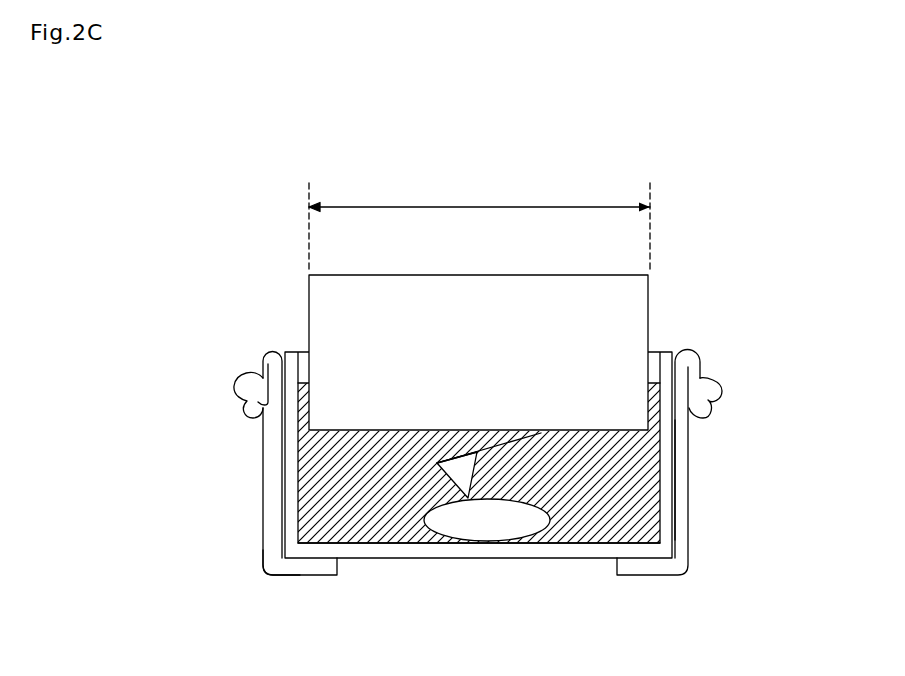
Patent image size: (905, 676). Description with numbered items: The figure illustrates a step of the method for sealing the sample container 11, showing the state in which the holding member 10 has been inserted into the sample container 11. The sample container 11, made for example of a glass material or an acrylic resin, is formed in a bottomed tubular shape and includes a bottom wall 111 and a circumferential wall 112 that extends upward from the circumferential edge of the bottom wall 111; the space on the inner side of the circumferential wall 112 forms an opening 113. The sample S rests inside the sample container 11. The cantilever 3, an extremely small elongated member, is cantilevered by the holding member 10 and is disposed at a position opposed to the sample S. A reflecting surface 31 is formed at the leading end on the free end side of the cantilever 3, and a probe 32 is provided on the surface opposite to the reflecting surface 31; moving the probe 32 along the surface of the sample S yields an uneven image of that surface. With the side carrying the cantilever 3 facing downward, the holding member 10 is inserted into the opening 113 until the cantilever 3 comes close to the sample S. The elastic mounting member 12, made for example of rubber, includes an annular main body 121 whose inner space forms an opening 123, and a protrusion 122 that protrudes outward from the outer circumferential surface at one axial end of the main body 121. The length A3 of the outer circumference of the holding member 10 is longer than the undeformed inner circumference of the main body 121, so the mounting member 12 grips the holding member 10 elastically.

The holding member 10 is at (648, 320).
The sample container 11 is at (348, 560).
The bottom wall 111 is at (433, 556).
The circumferential wall 112 is at (658, 503).
The opening 113 is at (305, 352).
The mounting member 12 is at (521, 489).
The main body 121 is at (684, 478).
The protrusion 122 is at (723, 390).
The opening 123 is at (297, 551).
The cantilever 3 is at (541, 433).
The reflecting surface 31 is at (470, 455).
The probe 32 is at (437, 472).
The sample S is at (502, 541).
The length of outer circumference of holding member A3 is at (479, 213).